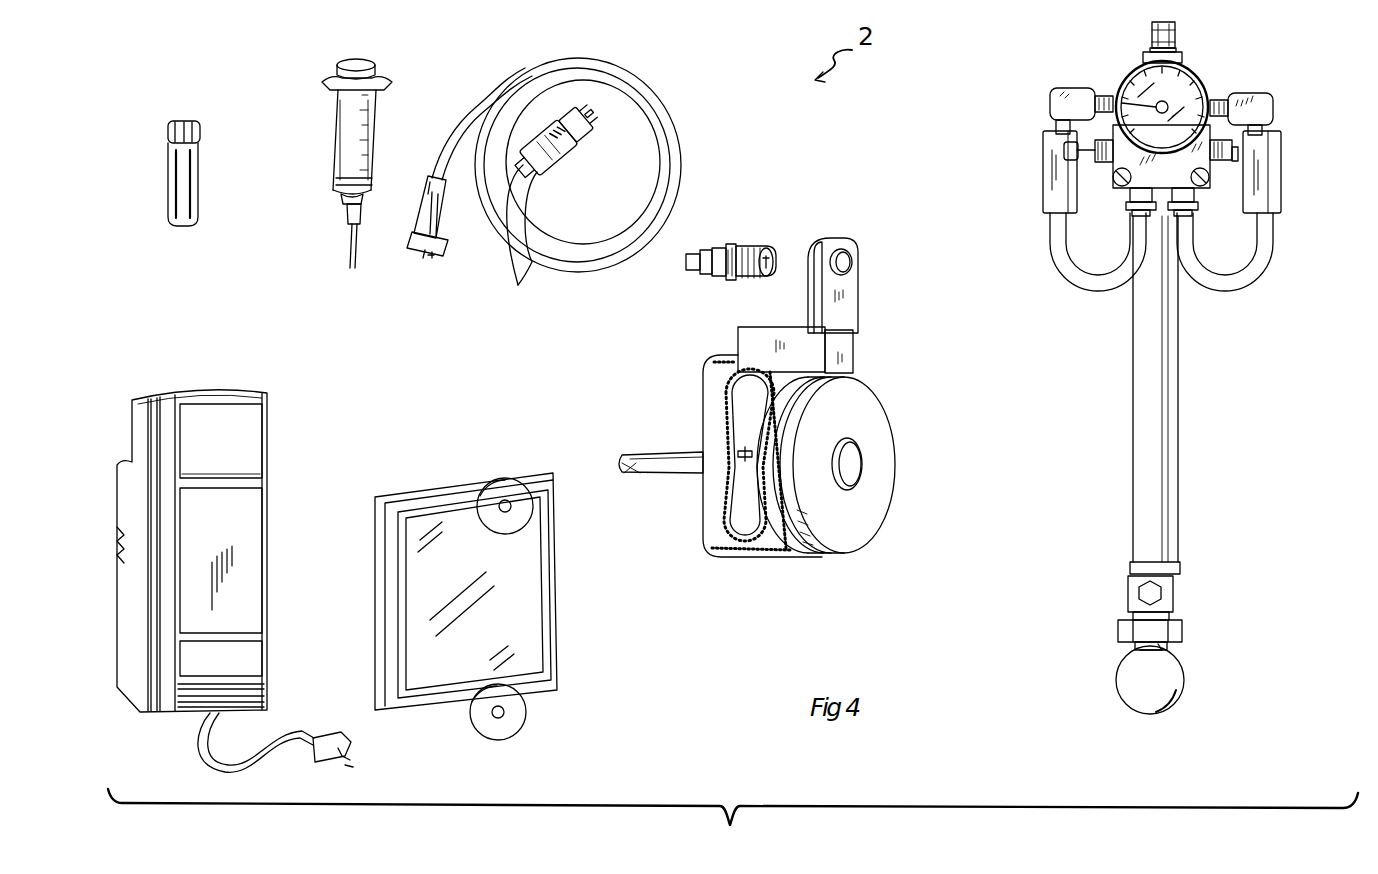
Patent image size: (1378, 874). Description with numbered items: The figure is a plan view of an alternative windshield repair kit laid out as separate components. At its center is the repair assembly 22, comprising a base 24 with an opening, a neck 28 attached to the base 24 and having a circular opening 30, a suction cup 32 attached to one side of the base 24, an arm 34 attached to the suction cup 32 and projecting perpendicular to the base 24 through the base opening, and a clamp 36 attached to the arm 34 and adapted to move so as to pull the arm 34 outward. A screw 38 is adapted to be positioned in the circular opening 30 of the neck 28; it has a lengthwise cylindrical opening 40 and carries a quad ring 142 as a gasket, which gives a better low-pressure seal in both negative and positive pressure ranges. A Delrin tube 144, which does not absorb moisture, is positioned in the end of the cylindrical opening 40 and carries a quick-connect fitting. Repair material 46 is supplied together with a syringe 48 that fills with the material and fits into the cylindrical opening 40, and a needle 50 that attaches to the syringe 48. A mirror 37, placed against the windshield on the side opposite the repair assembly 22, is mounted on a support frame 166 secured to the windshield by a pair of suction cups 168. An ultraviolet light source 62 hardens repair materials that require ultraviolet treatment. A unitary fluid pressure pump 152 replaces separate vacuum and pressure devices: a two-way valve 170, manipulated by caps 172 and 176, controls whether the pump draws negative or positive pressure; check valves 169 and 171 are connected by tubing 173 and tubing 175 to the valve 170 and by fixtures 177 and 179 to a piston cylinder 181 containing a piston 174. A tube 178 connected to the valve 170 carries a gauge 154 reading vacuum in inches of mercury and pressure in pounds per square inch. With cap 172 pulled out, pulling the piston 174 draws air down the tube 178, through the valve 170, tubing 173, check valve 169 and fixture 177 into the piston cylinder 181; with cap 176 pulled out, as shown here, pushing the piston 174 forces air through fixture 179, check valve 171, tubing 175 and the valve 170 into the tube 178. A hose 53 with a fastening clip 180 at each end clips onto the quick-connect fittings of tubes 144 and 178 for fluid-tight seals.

The repair assembly 22 is at (754, 568).
The base 24 is at (770, 418).
The neck 28 is at (850, 304).
The circular opening 30 is at (852, 258).
The suction cup 32 is at (896, 462).
The arm 34 is at (735, 465).
The clamp 36 is at (672, 466).
The mirror 37 is at (512, 600).
The screw 38 is at (730, 246).
The cylindrical opening 40 is at (766, 276).
The repair material 46 is at (190, 185).
The syringe 48 is at (348, 135).
The needle 50 is at (350, 243).
The hose 53 is at (645, 92).
The ultraviolet light source 62 is at (272, 446).
The quad ring 142 is at (766, 246).
The tube 144 is at (690, 262).
The unitary fluid pressure pump 152 is at (1202, 318).
The gauge 154 is at (1192, 74).
The support frame 166 is at (432, 497).
The suction cups 168 is at (510, 487).
The check valve 169 is at (1266, 172).
The two-way valve 170 is at (1227, 102).
The check valve 171 is at (1044, 165).
The cap 172 is at (1236, 161).
The tubing 173 is at (1235, 258).
The piston 174 is at (1168, 686).
The tubing 175 is at (1104, 262).
The cap 176 is at (1062, 148).
The fixture 177 is at (1265, 104).
The tube 178 is at (1174, 16).
The fixture 179 is at (1050, 100).
The fastening clip 180 is at (445, 248).
The piston cylinder 181 is at (1158, 478).